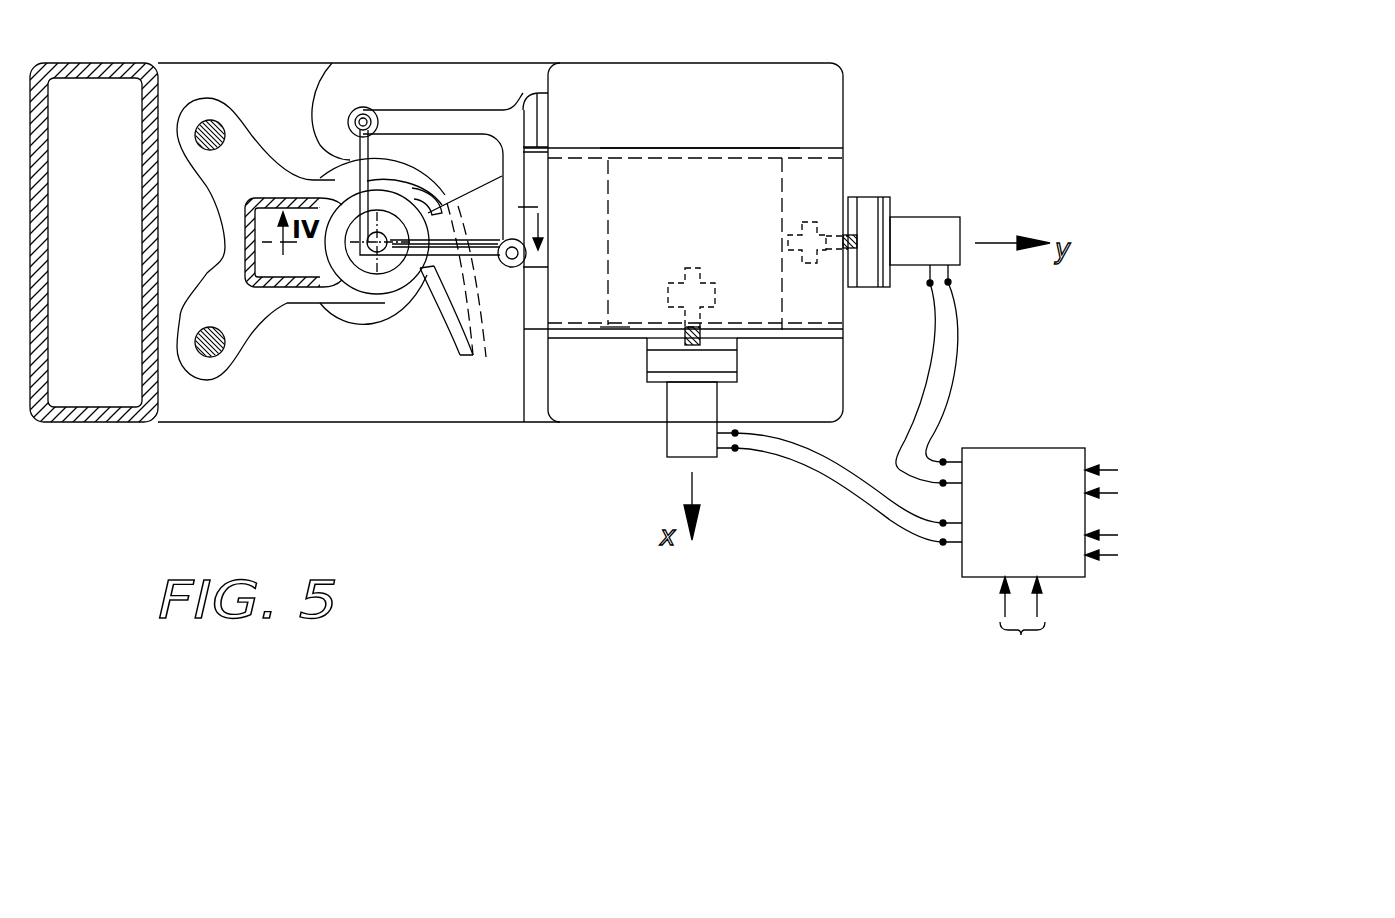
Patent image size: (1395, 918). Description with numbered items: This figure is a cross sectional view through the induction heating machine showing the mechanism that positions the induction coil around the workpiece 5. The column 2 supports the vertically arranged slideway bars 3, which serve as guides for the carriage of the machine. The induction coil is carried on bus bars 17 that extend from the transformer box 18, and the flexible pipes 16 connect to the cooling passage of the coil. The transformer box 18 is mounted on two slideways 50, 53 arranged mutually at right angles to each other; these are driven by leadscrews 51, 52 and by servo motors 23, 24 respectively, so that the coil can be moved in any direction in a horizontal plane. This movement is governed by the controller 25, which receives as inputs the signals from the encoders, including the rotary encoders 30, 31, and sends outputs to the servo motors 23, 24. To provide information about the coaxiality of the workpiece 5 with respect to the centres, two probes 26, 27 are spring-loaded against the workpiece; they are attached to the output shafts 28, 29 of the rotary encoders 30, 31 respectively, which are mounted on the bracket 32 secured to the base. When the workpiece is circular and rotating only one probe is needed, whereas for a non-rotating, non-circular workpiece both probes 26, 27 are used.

The column 2 is at (92, 413).
The slideway bars 3 is at (210, 150).
The workpiece 5 is at (380, 236).
The flexible pipes 16 is at (504, 367).
The bus bars 17 is at (550, 217).
The transformer box 18 is at (643, 168).
The servo motor 23 is at (715, 458).
The servo motor 24 is at (947, 223).
The controller 25 is at (1003, 453).
The probe 26 is at (398, 258).
The probe 27 is at (327, 132).
The output shaft 28 is at (518, 270).
The output shaft 29 is at (366, 112).
The rotary encoder 30 is at (497, 268).
The rotary encoder 31 is at (366, 114).
The bracket 32 is at (523, 85).
The slideway 50 is at (816, 158).
The leadscrew 51 is at (706, 305).
The leadscrew 52 is at (830, 250).
The slideway 53 is at (607, 311).